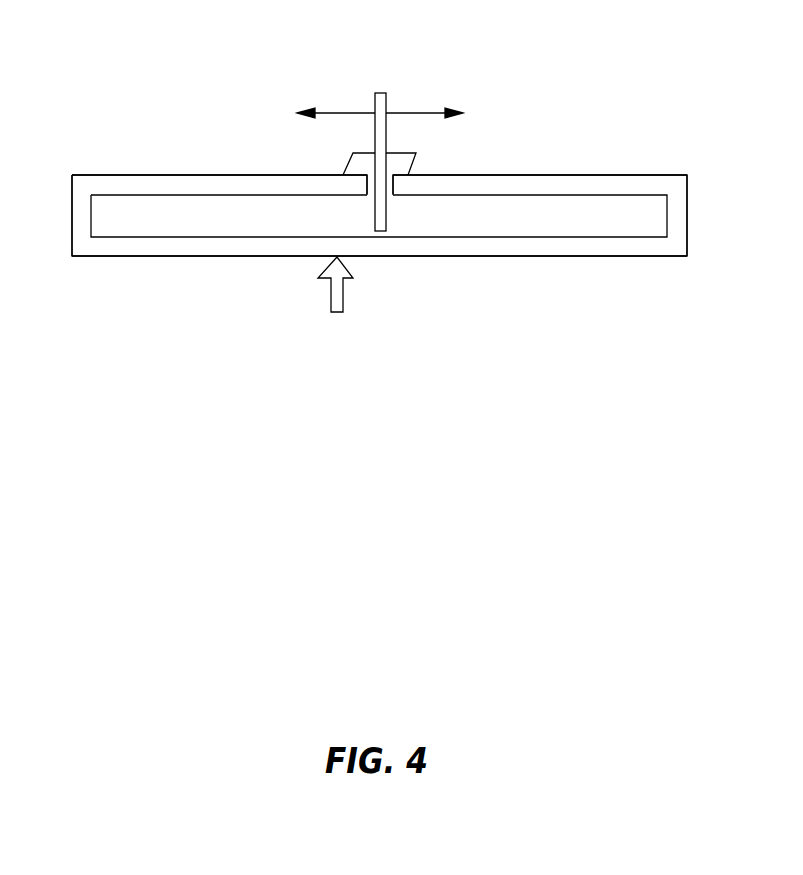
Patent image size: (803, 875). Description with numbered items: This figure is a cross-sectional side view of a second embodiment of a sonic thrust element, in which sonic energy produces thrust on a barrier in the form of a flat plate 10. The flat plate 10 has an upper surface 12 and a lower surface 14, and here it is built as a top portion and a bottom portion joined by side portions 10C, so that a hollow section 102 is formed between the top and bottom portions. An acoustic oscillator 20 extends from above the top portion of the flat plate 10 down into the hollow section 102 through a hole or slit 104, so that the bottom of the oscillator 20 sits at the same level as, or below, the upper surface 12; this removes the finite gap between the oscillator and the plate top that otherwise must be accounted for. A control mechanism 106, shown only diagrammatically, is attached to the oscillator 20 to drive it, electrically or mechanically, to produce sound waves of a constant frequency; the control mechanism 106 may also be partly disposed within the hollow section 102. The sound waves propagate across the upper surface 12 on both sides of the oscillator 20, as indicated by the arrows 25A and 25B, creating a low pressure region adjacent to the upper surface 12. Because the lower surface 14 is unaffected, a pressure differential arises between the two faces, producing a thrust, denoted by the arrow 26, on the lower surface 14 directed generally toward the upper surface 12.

The flat plate 10 is at (232, 132).
The upper surface 12 is at (137, 175).
The lower surface 14 is at (133, 258).
The side portions 10C is at (71, 217).
The acoustic oscillator 20 is at (379, 90).
The arrow indicating direction of sound propagation 25A is at (337, 110).
The arrow indicating direction of sound propagation 25B is at (423, 110).
The thrust arrow 26 is at (343, 295).
The hollow section 102 is at (499, 220).
The hole or slit 104 is at (389, 199).
The control mechanism 106 is at (413, 165).